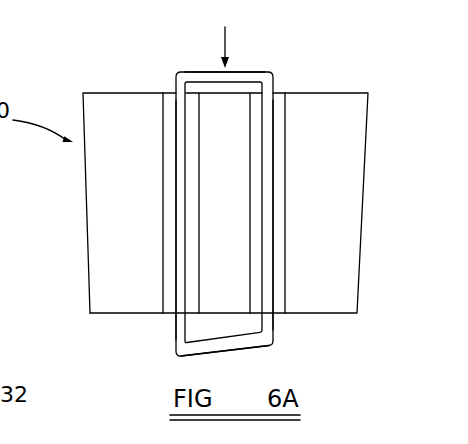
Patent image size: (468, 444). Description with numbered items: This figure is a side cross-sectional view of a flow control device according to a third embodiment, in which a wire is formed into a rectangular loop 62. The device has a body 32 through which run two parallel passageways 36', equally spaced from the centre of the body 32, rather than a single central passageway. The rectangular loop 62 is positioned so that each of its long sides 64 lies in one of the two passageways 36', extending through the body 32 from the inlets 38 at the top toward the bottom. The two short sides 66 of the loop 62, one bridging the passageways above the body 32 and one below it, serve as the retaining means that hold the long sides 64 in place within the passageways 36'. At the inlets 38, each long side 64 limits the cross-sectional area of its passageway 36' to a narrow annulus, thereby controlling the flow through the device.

The body 32 is at (318, 217).
The passageway 36' is at (208, 175).
The inlet 38 is at (166, 79).
The rectangular loop 62 is at (245, 72).
The long side 64 is at (176, 299).
The short side 66 is at (198, 72).